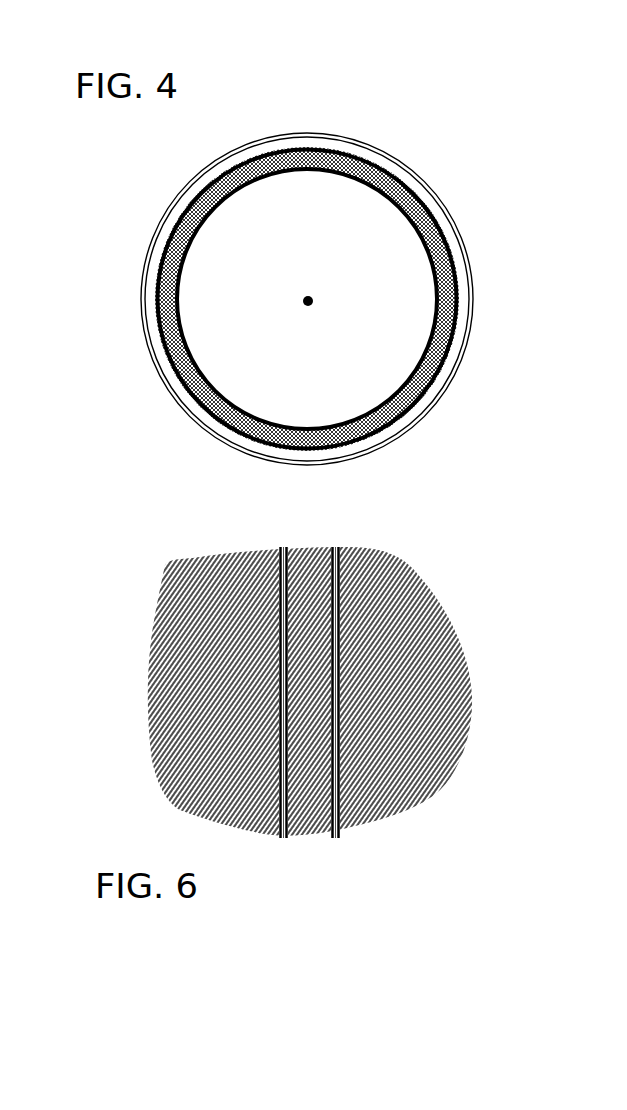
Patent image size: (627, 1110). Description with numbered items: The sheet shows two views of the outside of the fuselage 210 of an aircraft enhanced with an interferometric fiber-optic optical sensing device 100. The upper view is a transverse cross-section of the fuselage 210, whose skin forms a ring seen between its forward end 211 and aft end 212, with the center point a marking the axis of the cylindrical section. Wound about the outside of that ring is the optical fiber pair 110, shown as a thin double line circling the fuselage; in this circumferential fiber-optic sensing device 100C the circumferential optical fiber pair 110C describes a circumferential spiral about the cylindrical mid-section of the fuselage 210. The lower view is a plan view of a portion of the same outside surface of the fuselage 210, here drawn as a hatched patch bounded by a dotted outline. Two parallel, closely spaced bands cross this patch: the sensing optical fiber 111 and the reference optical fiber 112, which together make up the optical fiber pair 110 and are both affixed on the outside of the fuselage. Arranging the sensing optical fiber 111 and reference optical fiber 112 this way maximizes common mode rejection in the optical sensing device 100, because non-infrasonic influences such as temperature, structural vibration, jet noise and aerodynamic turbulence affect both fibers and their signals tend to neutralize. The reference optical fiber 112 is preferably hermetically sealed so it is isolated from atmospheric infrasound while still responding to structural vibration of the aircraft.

In FIG. 4, the optical sensing device 100 is at (307, 241).
In FIG. 4, the circumferential fiber-optic sensing device 100C is at (307, 241).
In FIG. 4, the optical fiber pair 110 is at (307, 241).
In FIG. 6, the optical fiber pair 110 is at (312, 692).
In FIG. 4, the circumferential optical fiber pair 110C is at (307, 241).
In FIG. 4, the sensing optical fiber 111 is at (307, 241).
In FIG. 6, the sensing optical fiber 111 is at (278, 740).
In FIG. 4, the reference optical fiber 112 is at (318, 134).
In FIG. 6, the reference optical fiber 112 is at (340, 740).
In FIG. 4, the fuselage 210 is at (349, 299).
In FIG. 6, the fuselage 210 is at (325, 691).
In FIG. 4, the forward end 211 is at (447, 223).
In FIG. 6, the forward end 211 is at (400, 630).
In FIG. 4, the aft end 212 is at (192, 248).
In FIG. 4, the central axis a is at (308, 306).